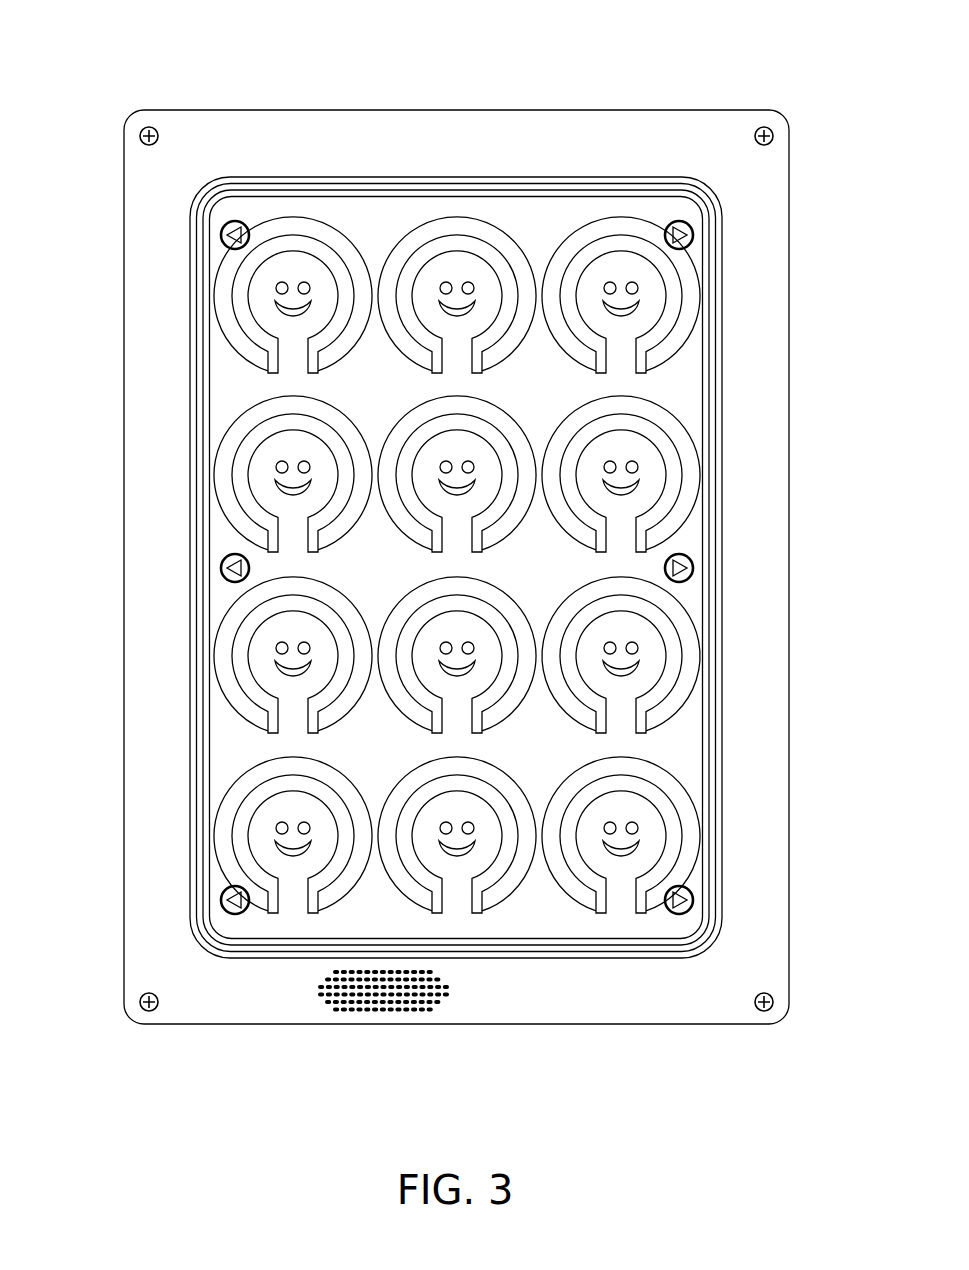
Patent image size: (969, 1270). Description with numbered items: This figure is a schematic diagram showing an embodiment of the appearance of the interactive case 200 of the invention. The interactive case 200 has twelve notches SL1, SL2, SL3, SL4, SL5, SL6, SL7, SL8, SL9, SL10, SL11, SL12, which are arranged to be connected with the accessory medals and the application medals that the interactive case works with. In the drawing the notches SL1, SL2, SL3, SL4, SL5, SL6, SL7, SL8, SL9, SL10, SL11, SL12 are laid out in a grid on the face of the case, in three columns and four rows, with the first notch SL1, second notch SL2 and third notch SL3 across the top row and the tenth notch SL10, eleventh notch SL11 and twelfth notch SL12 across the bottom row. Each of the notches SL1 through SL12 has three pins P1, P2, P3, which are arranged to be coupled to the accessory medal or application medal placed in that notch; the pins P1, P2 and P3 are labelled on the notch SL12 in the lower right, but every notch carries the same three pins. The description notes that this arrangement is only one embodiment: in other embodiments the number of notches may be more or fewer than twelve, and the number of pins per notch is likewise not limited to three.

The interactive case 200 is at (713, 110).
The notch SL1 is at (293, 215).
The notch SL2 is at (457, 215).
The notch SL3 is at (621, 215).
The notch SL4 is at (238, 413).
The notch SL5 is at (513, 413).
The notch SL6 is at (675, 413).
The notch SL7 is at (238, 720).
The notch SL8 is at (513, 593).
The notch SL9 is at (675, 720).
The notch SL10 is at (262, 913).
The notch SL11 is at (486, 913).
The notch SL12 is at (700, 923).
The pin P1 is at (612, 826).
The pin P2 is at (634, 826).
The pin P3 is at (640, 845).